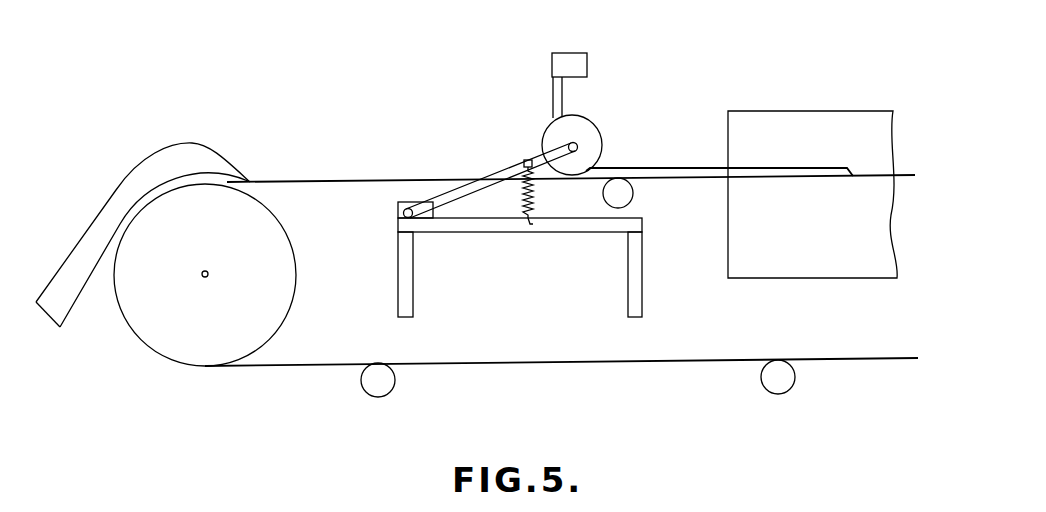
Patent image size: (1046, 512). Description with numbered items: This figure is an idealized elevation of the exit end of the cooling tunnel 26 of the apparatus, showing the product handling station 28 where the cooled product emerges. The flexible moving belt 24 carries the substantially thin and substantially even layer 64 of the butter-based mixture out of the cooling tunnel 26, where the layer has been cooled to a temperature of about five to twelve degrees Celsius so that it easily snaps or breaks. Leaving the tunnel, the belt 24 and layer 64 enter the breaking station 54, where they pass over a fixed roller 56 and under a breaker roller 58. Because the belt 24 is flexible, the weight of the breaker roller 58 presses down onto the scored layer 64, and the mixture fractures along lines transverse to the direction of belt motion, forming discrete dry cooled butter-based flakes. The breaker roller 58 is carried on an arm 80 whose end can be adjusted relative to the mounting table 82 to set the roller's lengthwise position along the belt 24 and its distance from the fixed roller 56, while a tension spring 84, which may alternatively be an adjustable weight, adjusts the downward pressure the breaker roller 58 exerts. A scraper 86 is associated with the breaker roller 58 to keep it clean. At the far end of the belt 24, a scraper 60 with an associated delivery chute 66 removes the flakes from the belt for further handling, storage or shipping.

The moving belt 24 is at (672, 173).
The cooling tunnel 26 is at (775, 120).
The product handling station 28 is at (206, 100).
The breaking station 54 is at (574, 93).
The fixed roller 56 is at (628, 195).
The breaker roller 58 is at (598, 132).
The scraper 60 is at (200, 162).
The substantially thin and substantially even layer 64 is at (802, 165).
The delivery chute 66 is at (84, 256).
The arm 80 is at (447, 193).
The mounting table 82 is at (487, 227).
The tension spring 84 is at (537, 198).
The scraper 86 is at (551, 92).